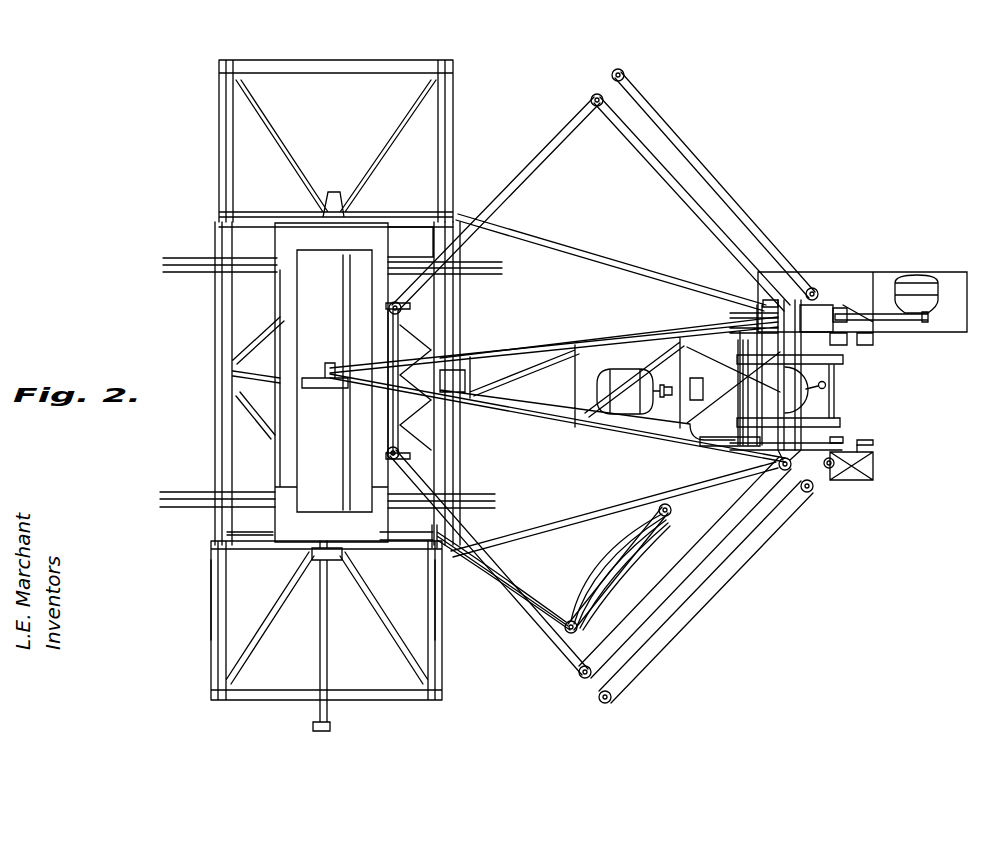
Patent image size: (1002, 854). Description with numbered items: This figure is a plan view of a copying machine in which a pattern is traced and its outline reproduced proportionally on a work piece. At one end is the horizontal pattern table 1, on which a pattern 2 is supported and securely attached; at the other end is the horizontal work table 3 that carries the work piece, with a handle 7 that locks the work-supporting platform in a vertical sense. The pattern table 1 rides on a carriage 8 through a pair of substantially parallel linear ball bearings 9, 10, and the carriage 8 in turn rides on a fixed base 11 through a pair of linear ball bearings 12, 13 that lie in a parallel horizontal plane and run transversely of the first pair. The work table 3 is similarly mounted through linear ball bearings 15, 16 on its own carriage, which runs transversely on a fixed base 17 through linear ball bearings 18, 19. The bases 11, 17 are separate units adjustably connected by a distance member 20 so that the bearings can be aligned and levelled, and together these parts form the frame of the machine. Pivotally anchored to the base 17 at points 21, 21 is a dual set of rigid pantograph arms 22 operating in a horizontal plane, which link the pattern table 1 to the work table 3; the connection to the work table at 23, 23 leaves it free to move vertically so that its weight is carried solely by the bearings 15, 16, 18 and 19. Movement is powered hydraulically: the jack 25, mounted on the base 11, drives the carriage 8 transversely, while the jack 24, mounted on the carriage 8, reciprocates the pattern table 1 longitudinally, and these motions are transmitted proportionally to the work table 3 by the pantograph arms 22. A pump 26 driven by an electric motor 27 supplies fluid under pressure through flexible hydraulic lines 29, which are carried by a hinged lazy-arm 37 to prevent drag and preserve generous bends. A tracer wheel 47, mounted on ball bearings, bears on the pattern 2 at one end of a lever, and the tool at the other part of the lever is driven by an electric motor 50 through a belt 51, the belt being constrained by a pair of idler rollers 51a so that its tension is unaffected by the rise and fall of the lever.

The pattern table 1 is at (280, 242).
The pattern 2 is at (303, 300).
The work table 3 is at (828, 398).
The handle 7 is at (827, 384).
The carriage 8 is at (213, 525).
The linear ball bearing 9 is at (215, 266).
The linear ball bearing 10 is at (215, 496).
The fixed base 11 is at (278, 694).
The linear ball bearing 12 is at (212, 583).
The linear ball bearing 13 is at (437, 598).
The linear ball bearing 15 is at (843, 423).
The linear ball bearing 16 is at (845, 358).
The fixed base 17 is at (838, 482).
The linear ball bearing 18 is at (760, 480).
The linear ball bearing 19 is at (808, 495).
The distance member 20 is at (578, 258).
The pivotal anchorage 21 is at (832, 478).
The pantograph arms 22 is at (716, 178).
The connection of work table to pantograph arms 23 is at (790, 300).
The hydraulic jack 24 is at (500, 385).
The hydraulic jack 25 is at (322, 640).
The pump 26 is at (702, 335).
The electric motor 27 is at (634, 391).
The flexible hydraulic lines 29 is at (616, 530).
The hinged lazy-arm 37 is at (596, 592).
The tracer wheel 47 is at (316, 390).
The electric motor 50 is at (932, 280).
The belt 51 is at (892, 313).
The idler rollers 51a is at (840, 305).